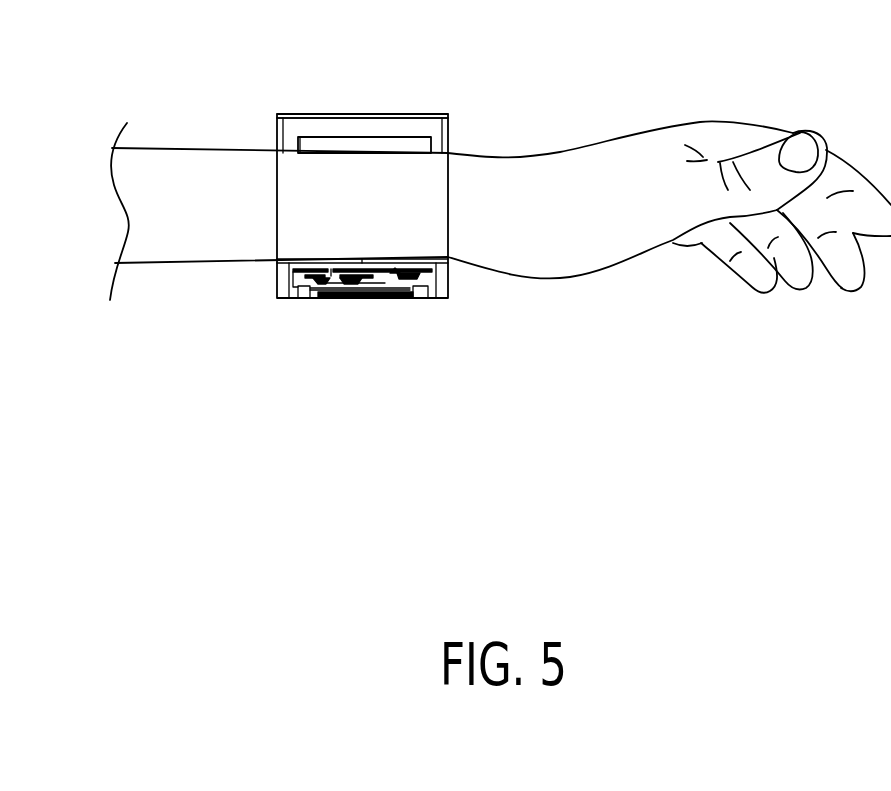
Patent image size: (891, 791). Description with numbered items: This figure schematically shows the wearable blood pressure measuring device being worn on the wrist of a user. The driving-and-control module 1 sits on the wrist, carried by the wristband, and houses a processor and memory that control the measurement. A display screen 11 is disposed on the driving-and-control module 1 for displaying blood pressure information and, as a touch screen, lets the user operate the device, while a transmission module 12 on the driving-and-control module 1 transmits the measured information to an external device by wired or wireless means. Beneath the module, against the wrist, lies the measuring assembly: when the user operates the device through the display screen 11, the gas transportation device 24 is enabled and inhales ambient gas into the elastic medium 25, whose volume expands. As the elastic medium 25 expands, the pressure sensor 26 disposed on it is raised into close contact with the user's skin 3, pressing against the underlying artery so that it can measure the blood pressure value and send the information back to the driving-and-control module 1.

The driving-and-control module 1 is at (406, 217).
The user's skin 3 is at (448, 249).
The display screen 11 is at (348, 112).
The transmission module 12 is at (308, 148).
The gas transportation device 24 is at (418, 298).
The elastic medium 25 is at (385, 270).
The pressure sensor 26 is at (426, 259).